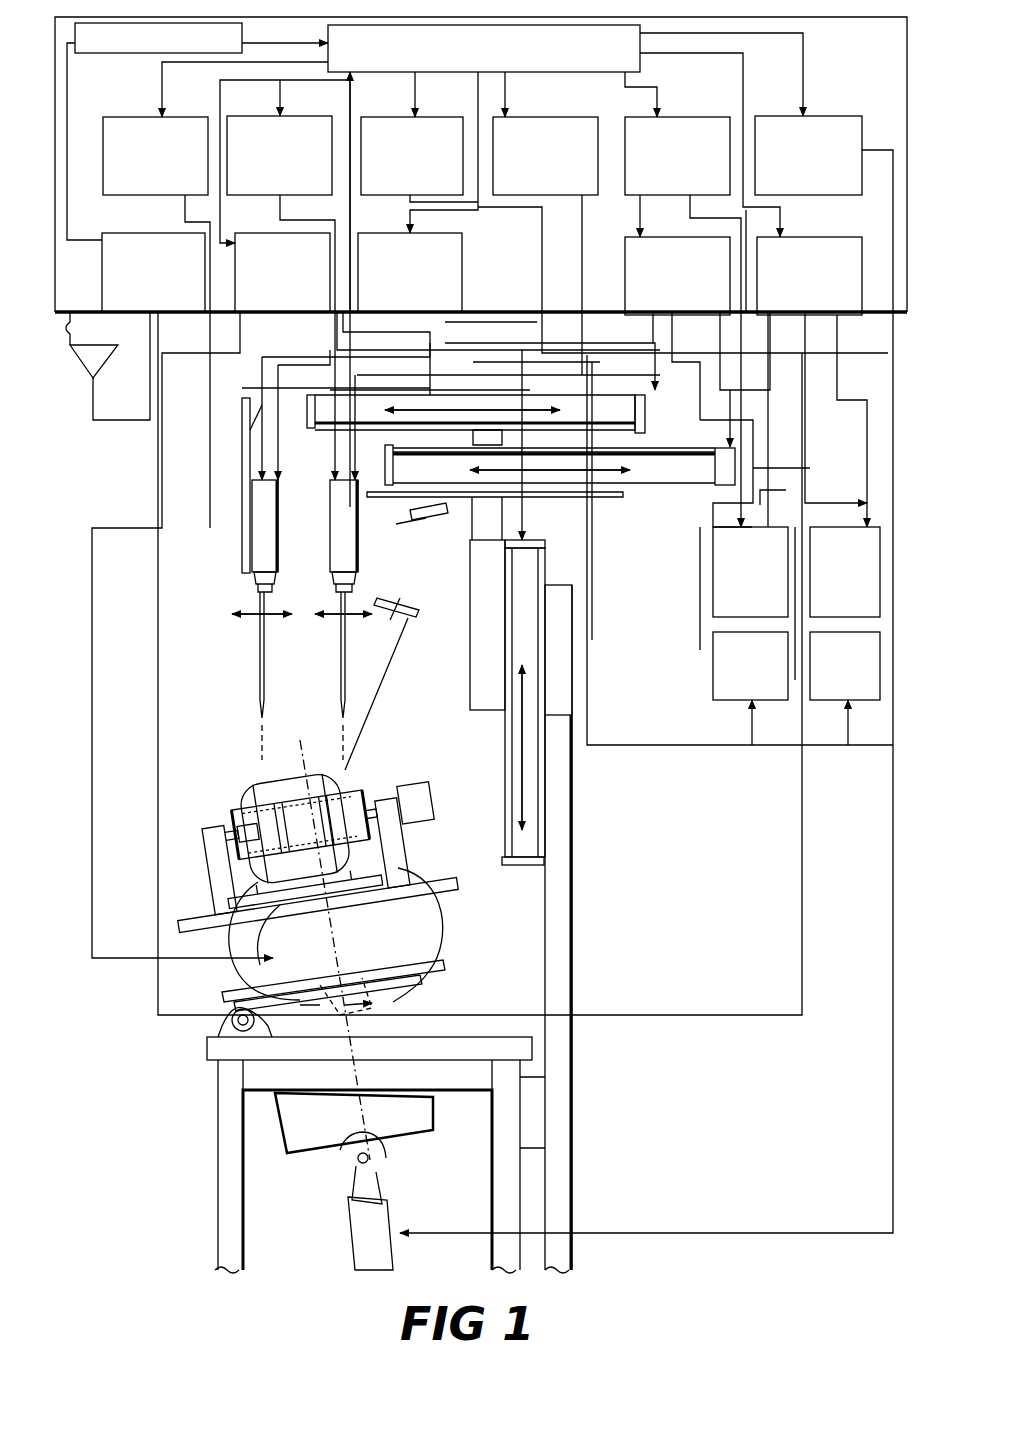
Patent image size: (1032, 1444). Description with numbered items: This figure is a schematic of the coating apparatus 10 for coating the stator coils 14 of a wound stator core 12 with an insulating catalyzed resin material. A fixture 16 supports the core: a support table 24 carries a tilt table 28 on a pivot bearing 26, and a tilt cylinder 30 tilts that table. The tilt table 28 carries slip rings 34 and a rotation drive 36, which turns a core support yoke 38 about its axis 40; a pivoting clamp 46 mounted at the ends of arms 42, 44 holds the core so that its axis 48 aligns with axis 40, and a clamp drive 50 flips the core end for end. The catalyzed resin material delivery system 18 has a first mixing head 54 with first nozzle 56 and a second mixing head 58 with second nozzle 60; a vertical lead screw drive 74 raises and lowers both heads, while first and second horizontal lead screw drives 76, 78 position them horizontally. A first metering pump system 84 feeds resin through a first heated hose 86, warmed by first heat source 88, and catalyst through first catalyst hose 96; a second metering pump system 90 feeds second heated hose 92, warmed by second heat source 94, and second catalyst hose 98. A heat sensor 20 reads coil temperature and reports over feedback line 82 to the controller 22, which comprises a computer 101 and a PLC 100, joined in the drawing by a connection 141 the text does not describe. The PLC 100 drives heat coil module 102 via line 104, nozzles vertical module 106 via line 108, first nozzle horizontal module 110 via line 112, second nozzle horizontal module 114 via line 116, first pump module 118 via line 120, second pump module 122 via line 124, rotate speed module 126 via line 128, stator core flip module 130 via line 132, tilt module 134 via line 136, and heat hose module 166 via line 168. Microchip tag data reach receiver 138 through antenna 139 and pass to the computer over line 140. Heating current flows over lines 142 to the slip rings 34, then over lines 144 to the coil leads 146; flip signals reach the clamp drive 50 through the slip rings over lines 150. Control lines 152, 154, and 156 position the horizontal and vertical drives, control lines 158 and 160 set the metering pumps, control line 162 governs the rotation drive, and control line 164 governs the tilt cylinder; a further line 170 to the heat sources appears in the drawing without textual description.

The coating apparatus 10 is at (70, 1026).
The wound stator core 12 is at (300, 825).
The stator coils 14 is at (295, 829).
The support fixture 16 is at (510, 965).
The catalyzed resin material delivery system 18 is at (271, 579).
The infrared heat sensor 20 is at (412, 614).
The controller 22 is at (96, 366).
The support table 24 is at (208, 1134).
The pivot bearing 26 is at (227, 1022).
The tilt table 28 is at (436, 956).
The tilt cylinder 30 is at (388, 1206).
The slip rings 34 is at (383, 994).
The rotation drive 36 is at (394, 946).
The core support yoke 38 is at (318, 904).
The axis of rotation drive 40 is at (344, 1088).
The yoke arm 42 is at (392, 843).
The yoke arm 44 is at (219, 869).
The pivoting clamp 46 is at (301, 824).
The axis of wound stator core 48 is at (295, 763).
The clamp drive motor 50 is at (415, 803).
The first mixing head 54 is at (268, 516).
The first nozzle 56 is at (258, 660).
The second mixing head 58 is at (330, 540).
The second nozzle 60 is at (342, 647).
The vertical lead screw drive 74 is at (532, 538).
The first horizontal lead screw drive 76 is at (654, 435).
The second horizontal lead screw drive 78 is at (672, 484).
The feedback line 82 is at (350, 105).
The first metering pump system 84 is at (750, 572).
The first heated hose 86 is at (750, 420).
The first heat source 88 is at (713, 686).
The second metering pump system 90 is at (845, 572).
The second heated hose 92 is at (860, 420).
The second heat source 94 is at (845, 704).
The first catalyst hose 96 is at (786, 490).
The second catalyst hose 98 is at (328, 446).
The programmable logic controller 100 is at (484, 48).
The general purpose digital computer 101 is at (158, 38).
The heat coil module 102 is at (282, 272).
The line 104 is at (231, 198).
The nozzles vertical module 106 is at (410, 272).
The line 108 is at (466, 82).
The first nozzle horizontal module 110 is at (412, 156).
The line 112 is at (430, 109).
The second nozzle horizontal module 114 is at (545, 156).
The line 116 is at (505, 96).
The first pump module 118 is at (677, 276).
The line 120 is at (623, 102).
The second pump module 122 is at (809, 276).
The line 124 is at (774, 70).
The rotate speed module 126 is at (155, 156).
The line 128 is at (162, 68).
The stator core flip module 130 is at (677, 156).
The line 132 is at (668, 90).
The tilt module 134 is at (808, 155).
The line 136 is at (806, 86).
The receiver 138 is at (153, 272).
The antenna 139 is at (109, 362).
The line 140 is at (85, 272).
The computer PLC line 141 is at (305, 43).
The lines 142 is at (157, 600).
The lines 144 is at (230, 968).
The leads 146 is at (305, 887).
The lines 150 is at (470, 865).
The control line 152 is at (540, 252).
The control line 154 is at (586, 312).
The control line 156 is at (480, 322).
The control line 158 is at (765, 468).
The control line 160 is at (837, 334).
The control line 162 is at (207, 449).
The control line 164 is at (892, 1171).
The heat hose module 166 is at (279, 155).
The line 168 is at (280, 92).
The hose heater line 170 is at (664, 745).